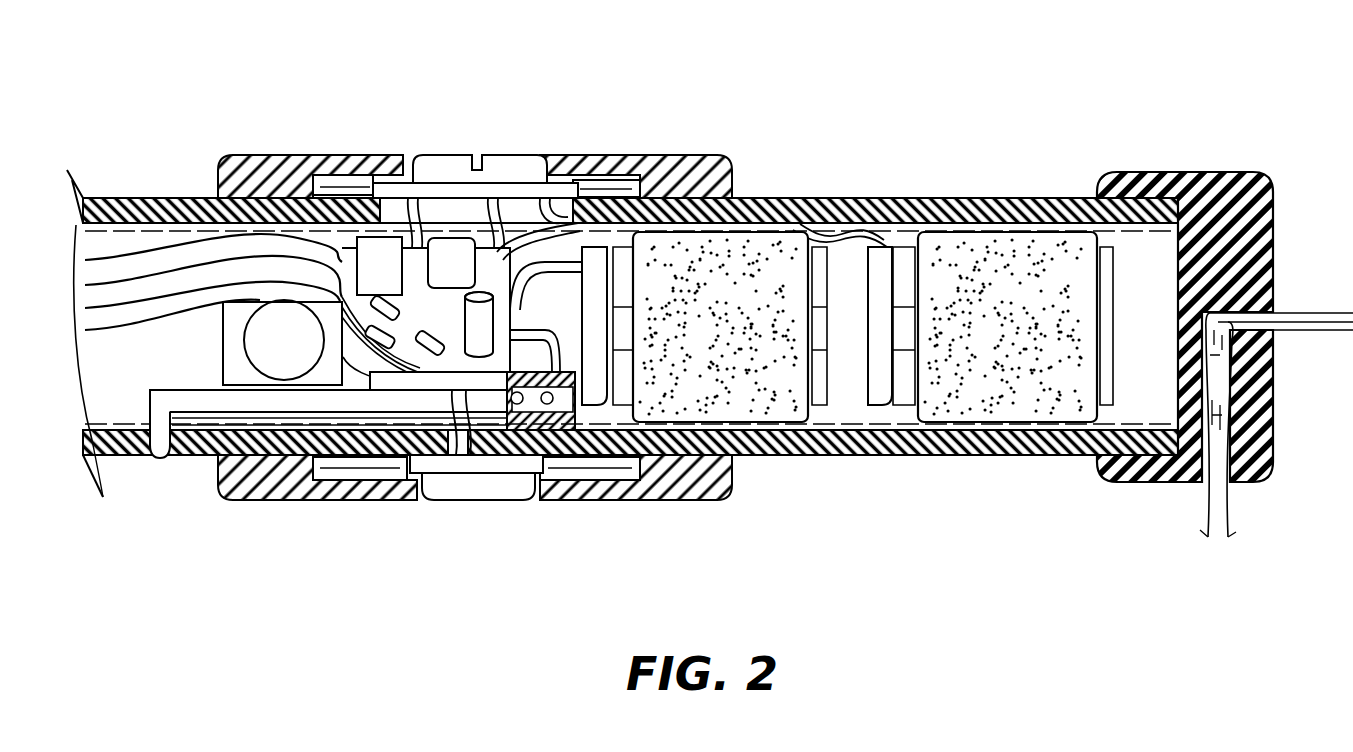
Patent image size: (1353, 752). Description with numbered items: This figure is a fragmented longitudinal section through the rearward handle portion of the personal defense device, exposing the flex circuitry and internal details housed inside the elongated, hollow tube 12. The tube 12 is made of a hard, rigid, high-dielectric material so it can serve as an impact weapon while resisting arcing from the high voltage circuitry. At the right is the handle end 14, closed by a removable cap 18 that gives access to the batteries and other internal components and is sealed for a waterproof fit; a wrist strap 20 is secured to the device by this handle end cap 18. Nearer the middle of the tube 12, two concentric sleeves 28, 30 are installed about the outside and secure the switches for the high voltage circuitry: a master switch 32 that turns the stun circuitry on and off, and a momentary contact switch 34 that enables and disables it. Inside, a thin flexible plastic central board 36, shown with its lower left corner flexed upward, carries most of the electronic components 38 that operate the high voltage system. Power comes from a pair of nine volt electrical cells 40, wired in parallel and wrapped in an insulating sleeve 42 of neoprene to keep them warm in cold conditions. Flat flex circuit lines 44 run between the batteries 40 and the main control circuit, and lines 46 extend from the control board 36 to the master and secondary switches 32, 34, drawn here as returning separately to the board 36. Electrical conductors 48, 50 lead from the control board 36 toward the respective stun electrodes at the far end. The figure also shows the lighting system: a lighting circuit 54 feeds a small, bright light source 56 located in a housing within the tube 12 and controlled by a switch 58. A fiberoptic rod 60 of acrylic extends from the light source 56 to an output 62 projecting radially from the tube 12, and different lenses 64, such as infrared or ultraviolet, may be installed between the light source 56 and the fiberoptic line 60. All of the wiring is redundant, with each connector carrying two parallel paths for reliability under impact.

The tube 12 is at (143, 192).
The handle end 14 is at (935, 198).
The removable cap 18 is at (1160, 172).
The wrist strap 20 is at (1335, 332).
The concentric sleeve 28 is at (290, 155).
The concentric sleeve 30 is at (672, 155).
The master switch 32 is at (448, 155).
The momentary contact switch 34 is at (450, 498).
The central board 36 is at (420, 183).
The electronic components 38 is at (456, 313).
The electrical cells 40 is at (817, 388).
The insulating sleeve 42 is at (770, 456).
The lines 44 is at (542, 155).
The lines 46 is at (505, 155).
The electrical conductor 48 is at (118, 263).
The electrical conductor 50 is at (98, 325).
The lighting circuit 54 is at (552, 325).
The light source 56 is at (567, 498).
The switch 58 is at (282, 342).
The fiberoptic rod 60 is at (220, 390).
The output 62 is at (153, 460).
The lenses 64 is at (528, 498).